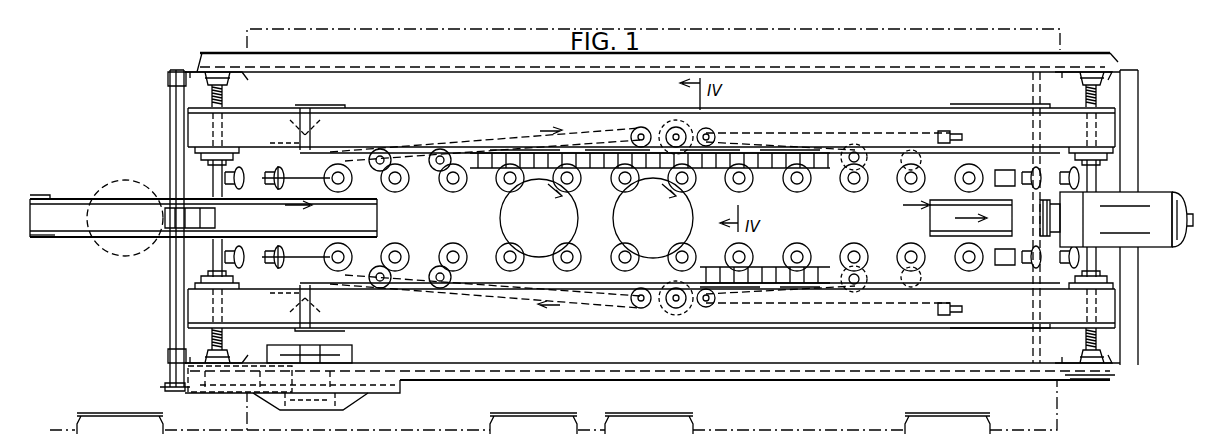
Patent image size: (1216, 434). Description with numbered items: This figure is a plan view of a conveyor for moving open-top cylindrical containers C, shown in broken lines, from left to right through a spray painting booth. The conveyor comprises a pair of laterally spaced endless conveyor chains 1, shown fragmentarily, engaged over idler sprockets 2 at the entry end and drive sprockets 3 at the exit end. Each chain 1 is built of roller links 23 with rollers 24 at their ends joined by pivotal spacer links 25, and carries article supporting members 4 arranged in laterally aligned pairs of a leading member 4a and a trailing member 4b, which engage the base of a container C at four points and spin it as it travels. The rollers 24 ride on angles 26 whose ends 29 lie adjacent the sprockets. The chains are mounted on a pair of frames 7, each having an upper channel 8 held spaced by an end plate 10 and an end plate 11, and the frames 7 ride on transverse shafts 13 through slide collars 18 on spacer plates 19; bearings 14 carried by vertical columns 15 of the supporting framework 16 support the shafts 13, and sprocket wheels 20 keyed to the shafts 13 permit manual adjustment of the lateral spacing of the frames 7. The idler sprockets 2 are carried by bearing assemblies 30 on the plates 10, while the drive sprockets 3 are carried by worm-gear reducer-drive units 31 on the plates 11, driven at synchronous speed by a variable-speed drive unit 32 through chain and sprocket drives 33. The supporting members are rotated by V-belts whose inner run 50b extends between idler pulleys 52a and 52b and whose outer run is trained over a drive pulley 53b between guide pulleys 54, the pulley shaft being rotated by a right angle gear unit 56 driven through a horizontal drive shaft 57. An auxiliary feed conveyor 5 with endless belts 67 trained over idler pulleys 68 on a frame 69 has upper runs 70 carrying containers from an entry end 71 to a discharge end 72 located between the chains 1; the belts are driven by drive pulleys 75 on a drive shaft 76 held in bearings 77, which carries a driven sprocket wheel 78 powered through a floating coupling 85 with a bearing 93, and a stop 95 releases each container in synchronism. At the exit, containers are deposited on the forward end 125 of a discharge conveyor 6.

The endless conveyor chains 1 is at (812, 182).
The idler sprockets 2 is at (283, 180).
The drive sprockets 3 is at (1005, 217).
The article supporting members 4 is at (402, 188).
The leading member 4a is at (580, 190).
The trailing member 4b is at (497, 190).
The auxiliary endless feed conveyor 5 is at (74, 255).
The auxiliary endless discharge conveyor 6 is at (905, 203).
The frames 7 is at (437, 112).
The upper channel 8 is at (516, 120).
The end plate 10 is at (318, 118).
The end plate 11 is at (972, 106).
The shafts 13 is at (212, 175).
The bearings 14 is at (220, 78).
The vertical columns 15 is at (196, 60).
The supporting framework 16 is at (778, 66).
The slide collars 18 is at (1108, 163).
The spacer plates 19 is at (1110, 150).
The sprocket wheels 20 is at (215, 393).
The roller links 23 is at (770, 152).
The rollers 24 is at (750, 190).
The pivotal spacer links 25 is at (815, 152).
The angles 26 is at (590, 270).
The ends of the angles 29 is at (338, 165).
The bearing assemblies 30 is at (287, 216).
The worm-gear reducer-drive units 31 is at (1003, 112).
The variable-speed drive unit 32 is at (1180, 200).
The chain and sprocket drives 33 is at (1062, 210).
The inner run 50b is at (436, 252).
The idler pulleys 52a is at (441, 150).
The idler pulleys 52b is at (381, 150).
The drive pulley 53b is at (676, 120).
The guide pulleys 54 is at (641, 126).
The right angle gear unit 56 is at (655, 318).
The horizontal drive shaft 57 is at (900, 128).
The endless conveyor belts 67 is at (36, 198).
The idler pulleys 68 is at (45, 240).
The frame 69 is at (258, 223).
The upper runs 70 is at (80, 198).
The entry end 71 is at (40, 226).
The discharge end 72 is at (378, 228).
The drive pulleys 75 is at (160, 248).
The drive shaft 76 is at (175, 314).
The bearings 77 is at (167, 80).
The driven sprocket wheel 78 is at (178, 392).
The floating coupling 85 is at (355, 353).
The bearing 93 is at (318, 406).
The stop 95 is at (168, 217).
The forward end 125 is at (930, 226).
The containers C is at (108, 188).